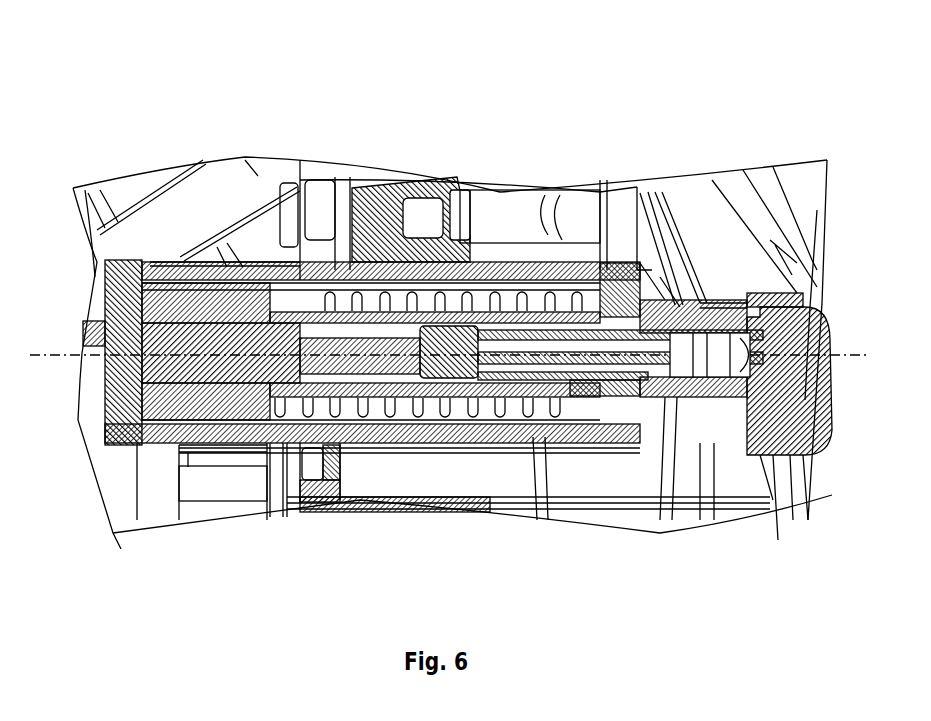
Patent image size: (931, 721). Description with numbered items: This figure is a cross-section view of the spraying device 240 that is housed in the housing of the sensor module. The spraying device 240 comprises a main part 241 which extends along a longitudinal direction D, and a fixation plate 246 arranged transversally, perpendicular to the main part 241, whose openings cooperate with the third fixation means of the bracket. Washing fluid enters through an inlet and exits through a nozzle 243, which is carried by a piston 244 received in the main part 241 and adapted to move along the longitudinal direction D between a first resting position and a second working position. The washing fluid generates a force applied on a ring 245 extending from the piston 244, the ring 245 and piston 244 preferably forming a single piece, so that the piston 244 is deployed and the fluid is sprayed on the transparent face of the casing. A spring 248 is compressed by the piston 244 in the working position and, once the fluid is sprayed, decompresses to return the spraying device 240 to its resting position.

The spraying device 240 is at (533, 148).
The main part 241 is at (243, 277).
The nozzle 243 is at (773, 453).
The piston 244 is at (657, 307).
The ring 245 is at (185, 270).
The fixation plate 246 is at (333, 183).
The spring 248 is at (412, 300).
The longitudinal direction D is at (58, 353).